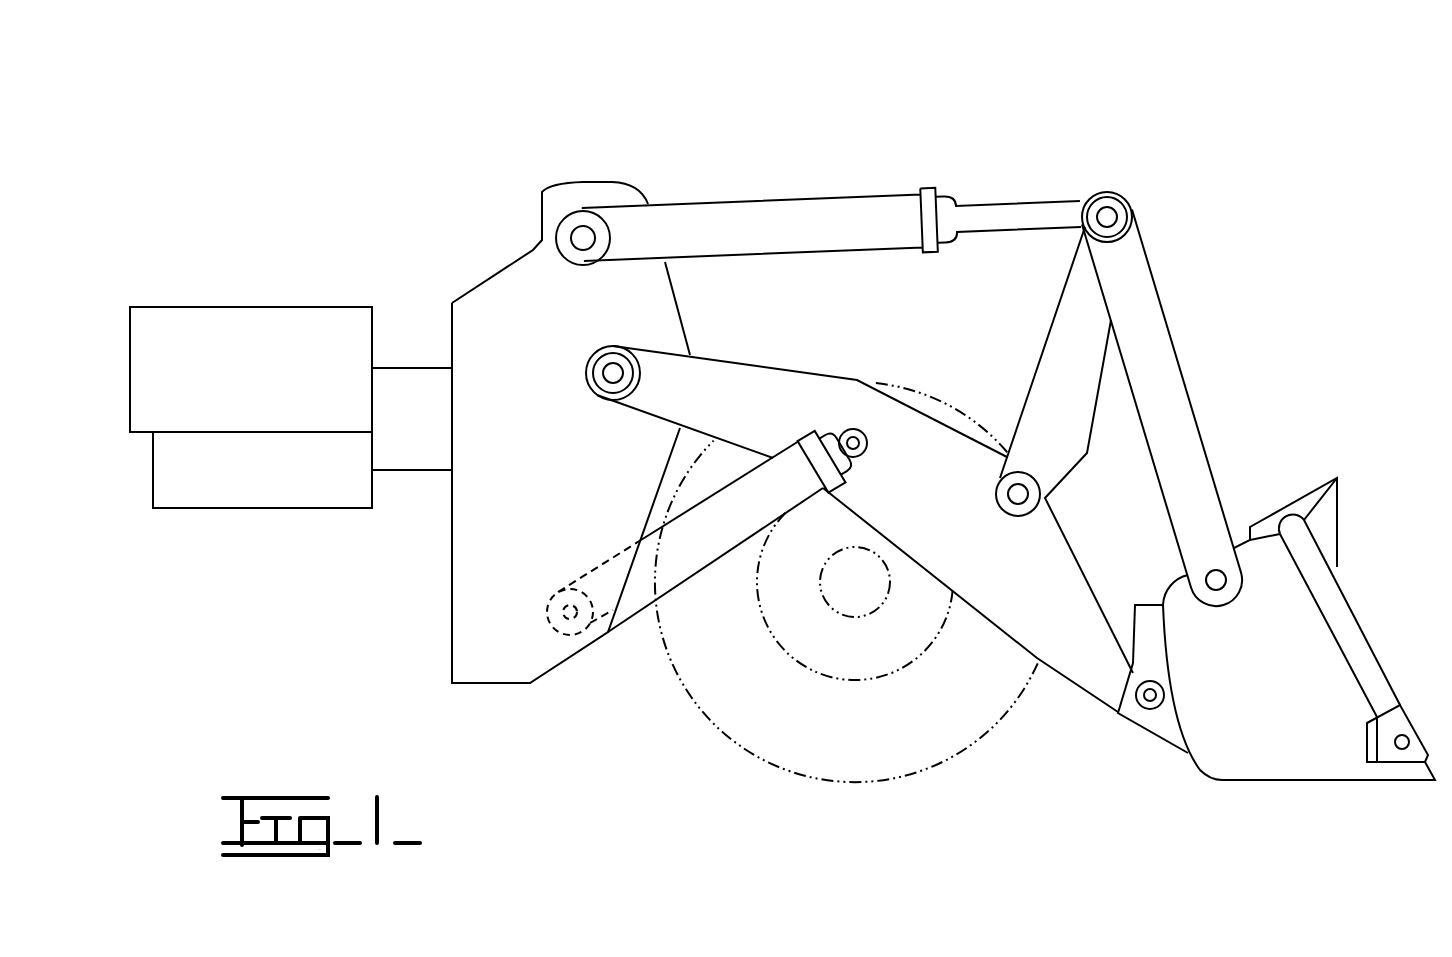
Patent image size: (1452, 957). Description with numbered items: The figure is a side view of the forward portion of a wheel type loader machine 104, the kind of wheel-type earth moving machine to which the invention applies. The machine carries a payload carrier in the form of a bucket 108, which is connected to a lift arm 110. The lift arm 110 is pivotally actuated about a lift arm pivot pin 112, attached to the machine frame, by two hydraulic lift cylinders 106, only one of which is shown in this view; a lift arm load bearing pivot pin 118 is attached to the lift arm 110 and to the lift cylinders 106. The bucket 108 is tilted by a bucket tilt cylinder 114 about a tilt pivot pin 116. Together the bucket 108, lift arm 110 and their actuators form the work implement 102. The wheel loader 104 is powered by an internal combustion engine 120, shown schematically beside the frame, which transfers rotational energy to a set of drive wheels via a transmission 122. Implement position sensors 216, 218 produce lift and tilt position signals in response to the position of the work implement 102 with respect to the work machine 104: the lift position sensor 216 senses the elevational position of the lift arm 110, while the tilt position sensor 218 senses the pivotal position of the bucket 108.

The work implement 102 is at (1160, 160).
The wheel type loader machine 104 is at (518, 455).
The hydraulic lift cylinder 106 is at (608, 580).
The bucket 108 is at (1297, 780).
The lift arm 110 is at (1035, 578).
The lift arm pivot pin 112 is at (583, 232).
The bucket tilt cylinder 114 is at (845, 213).
The tilt pivot pin 116 is at (1150, 700).
The lift arm load bearing pivot pin 118 is at (847, 432).
The internal combustion engine 120 is at (287, 307).
The transmission 122 is at (283, 508).
The lift position sensor 216 is at (605, 348).
The tilt position sensor 218 is at (1008, 500).